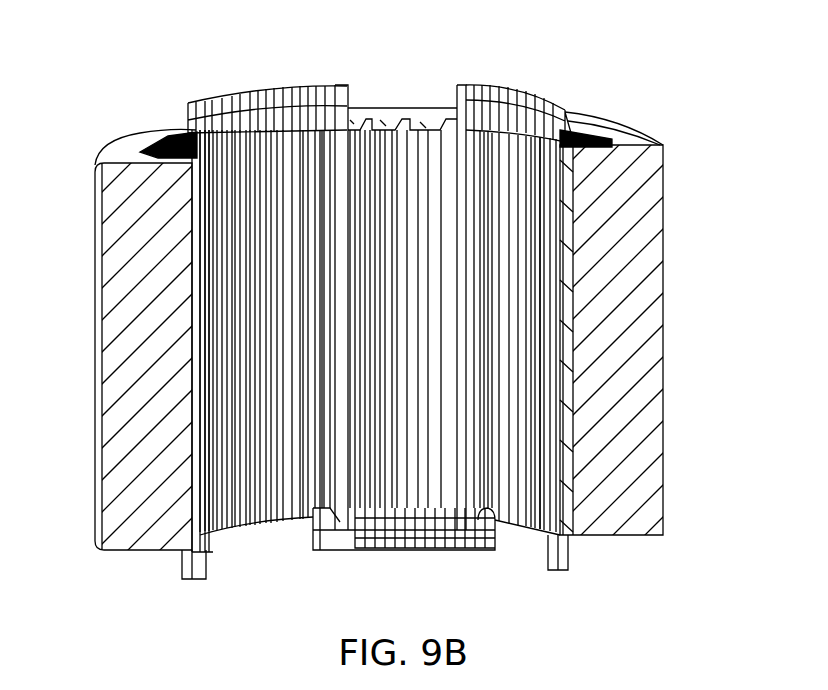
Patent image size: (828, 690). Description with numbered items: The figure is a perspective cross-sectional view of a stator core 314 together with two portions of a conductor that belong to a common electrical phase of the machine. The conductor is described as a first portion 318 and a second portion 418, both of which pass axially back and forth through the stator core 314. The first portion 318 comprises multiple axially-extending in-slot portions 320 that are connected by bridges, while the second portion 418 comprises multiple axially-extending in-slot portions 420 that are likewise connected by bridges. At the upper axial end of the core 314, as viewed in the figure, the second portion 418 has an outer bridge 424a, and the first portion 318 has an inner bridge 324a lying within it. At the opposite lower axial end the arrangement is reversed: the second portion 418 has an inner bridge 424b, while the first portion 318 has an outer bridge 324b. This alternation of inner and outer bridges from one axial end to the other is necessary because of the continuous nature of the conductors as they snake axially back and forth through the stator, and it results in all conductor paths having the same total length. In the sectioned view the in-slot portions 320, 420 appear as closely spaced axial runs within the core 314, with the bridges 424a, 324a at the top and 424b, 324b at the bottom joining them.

The stator core 314 is at (106, 297).
The first portion 318 is at (340, 213).
The in-slot portions 320 is at (322, 248).
The in-slot portions 420 is at (352, 198).
The second portion 418 is at (346, 186).
The outer bridge 424a is at (245, 94).
The inner bridge 324a is at (271, 93).
The inner bridge 424b is at (397, 522).
The outer bridge 324b is at (404, 546).